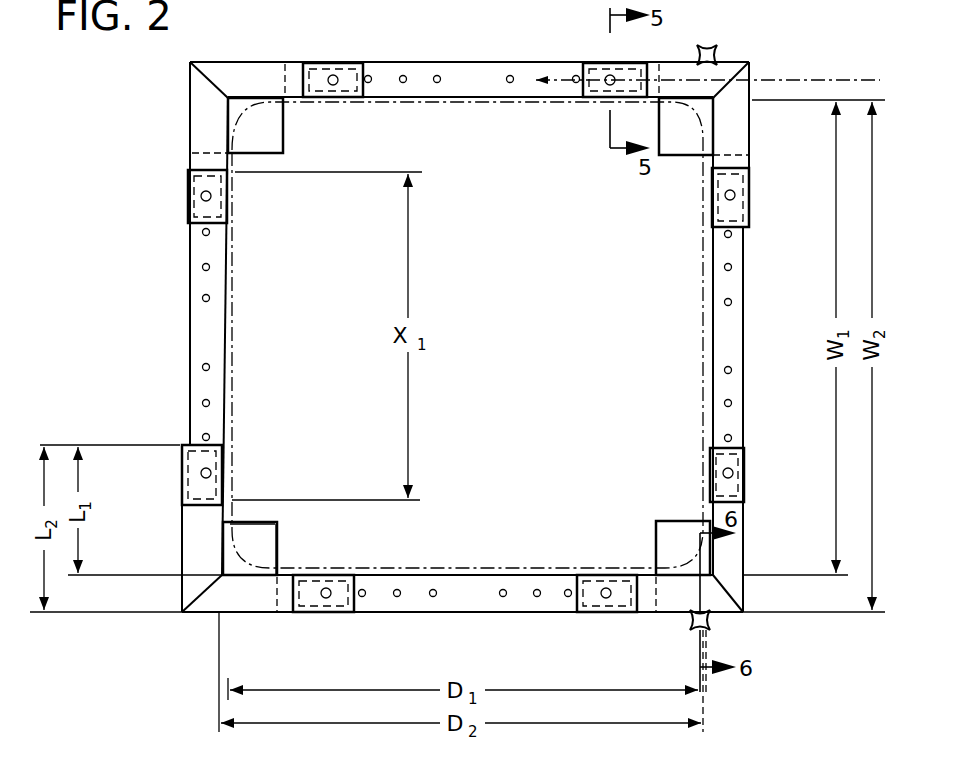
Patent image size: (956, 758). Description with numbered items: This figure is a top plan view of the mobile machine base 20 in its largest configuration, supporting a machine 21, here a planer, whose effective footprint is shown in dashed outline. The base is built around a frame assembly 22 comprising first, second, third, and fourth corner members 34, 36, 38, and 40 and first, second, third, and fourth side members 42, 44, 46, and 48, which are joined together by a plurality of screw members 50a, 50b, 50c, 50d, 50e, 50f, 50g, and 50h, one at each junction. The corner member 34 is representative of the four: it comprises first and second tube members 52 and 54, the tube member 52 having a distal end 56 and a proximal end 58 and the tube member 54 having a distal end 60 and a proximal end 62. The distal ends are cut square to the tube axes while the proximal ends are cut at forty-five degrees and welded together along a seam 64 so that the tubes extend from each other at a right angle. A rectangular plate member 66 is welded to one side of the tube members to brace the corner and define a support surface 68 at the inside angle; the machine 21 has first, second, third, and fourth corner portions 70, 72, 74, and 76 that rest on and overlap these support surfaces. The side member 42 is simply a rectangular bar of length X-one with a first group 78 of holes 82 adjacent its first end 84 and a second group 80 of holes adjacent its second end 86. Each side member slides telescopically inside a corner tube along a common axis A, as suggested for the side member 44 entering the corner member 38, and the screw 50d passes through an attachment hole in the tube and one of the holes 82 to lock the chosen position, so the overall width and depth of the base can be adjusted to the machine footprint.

The mobile machine base 20 is at (163, 92).
The machine 21 is at (222, 336).
The frame assembly 22 is at (185, 289).
The first corner member 34 is at (190, 555).
The second corner member 36 is at (205, 128).
The third corner member 38 is at (735, 143).
The fourth corner member 40 is at (733, 589).
The first side member 42 is at (197, 312).
The second side member 44 is at (463, 89).
The third side member 46 is at (725, 278).
The fourth side member 48 is at (487, 592).
The screw member 50a is at (201, 474).
The screw member 50b is at (201, 194).
The screw member 50c is at (335, 84).
The screw member 50d is at (608, 84).
The screw member 50e is at (725, 195).
The screw member 50f is at (723, 473).
The screw member 50g is at (606, 599).
The screw member 50h is at (327, 599).
The first tube member 52 is at (243, 605).
The second tube member 54 is at (190, 531).
The distal end 56 is at (365, 600).
The proximal end 58 is at (204, 608).
The distal end 60 is at (200, 440).
The proximal end 62 is at (197, 598).
The seam 64 is at (212, 609).
The rectangular plate member 66 is at (264, 520).
The support surface 68 is at (267, 537).
The first corner portion 70 is at (286, 550).
The second corner portion 72 is at (288, 129).
The third corner portion 74 is at (672, 158).
The fourth corner portion 76 is at (653, 545).
The first group of holes 78 is at (222, 198).
The second group of holes 80 is at (222, 368).
The holes 82 is at (202, 267).
The first end 84 is at (203, 169).
The second end 86 is at (194, 506).
The common axis A is at (795, 80).